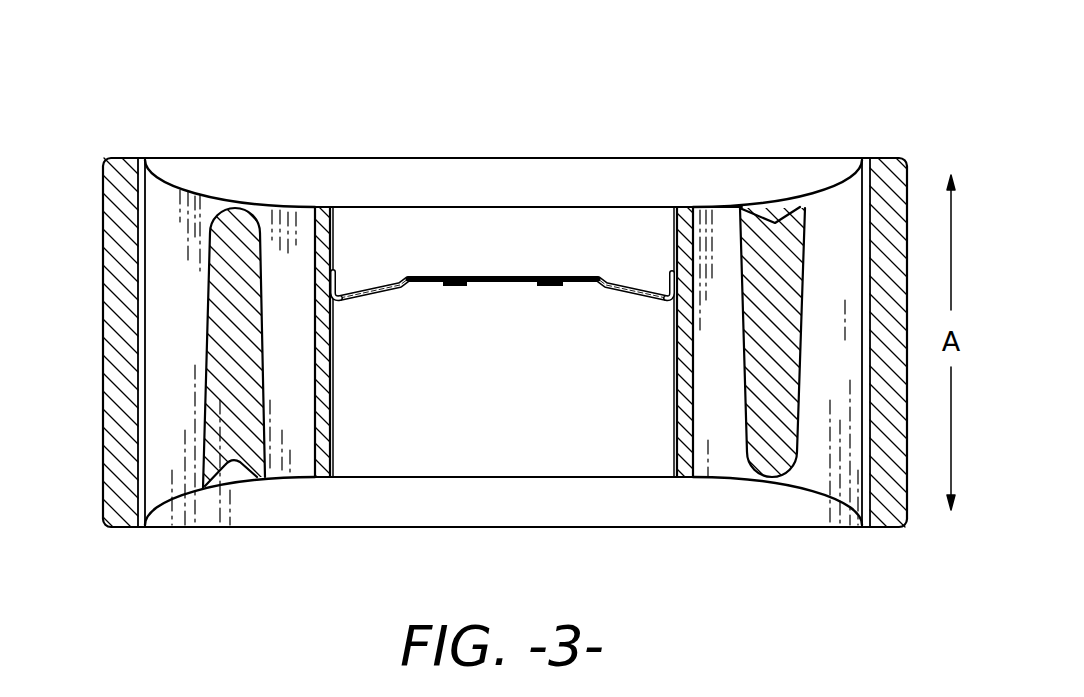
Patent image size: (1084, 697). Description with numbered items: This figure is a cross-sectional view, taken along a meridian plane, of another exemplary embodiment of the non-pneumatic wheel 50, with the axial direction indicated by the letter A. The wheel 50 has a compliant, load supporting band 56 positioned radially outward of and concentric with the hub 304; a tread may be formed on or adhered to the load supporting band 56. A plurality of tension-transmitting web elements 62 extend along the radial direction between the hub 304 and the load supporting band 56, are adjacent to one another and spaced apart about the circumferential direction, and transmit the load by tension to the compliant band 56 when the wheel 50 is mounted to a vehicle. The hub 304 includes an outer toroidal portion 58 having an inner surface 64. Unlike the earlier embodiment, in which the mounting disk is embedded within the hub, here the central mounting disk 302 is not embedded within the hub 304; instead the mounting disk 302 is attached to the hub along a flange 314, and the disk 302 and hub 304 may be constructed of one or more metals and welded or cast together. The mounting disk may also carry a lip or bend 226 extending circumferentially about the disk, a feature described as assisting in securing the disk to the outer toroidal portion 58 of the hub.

The non-pneumatic wheel 50 is at (804, 103).
The load supporting band 56 is at (125, 158).
The outer toroidal portion 58 is at (322, 373).
The tension-transmitting web elements 62 is at (288, 258).
The inner surface 64 is at (664, 240).
The lip or bend 226 is at (338, 302).
The central mounting disk 302 is at (450, 277).
The hub 304 is at (678, 210).
The flange 314 is at (347, 277).